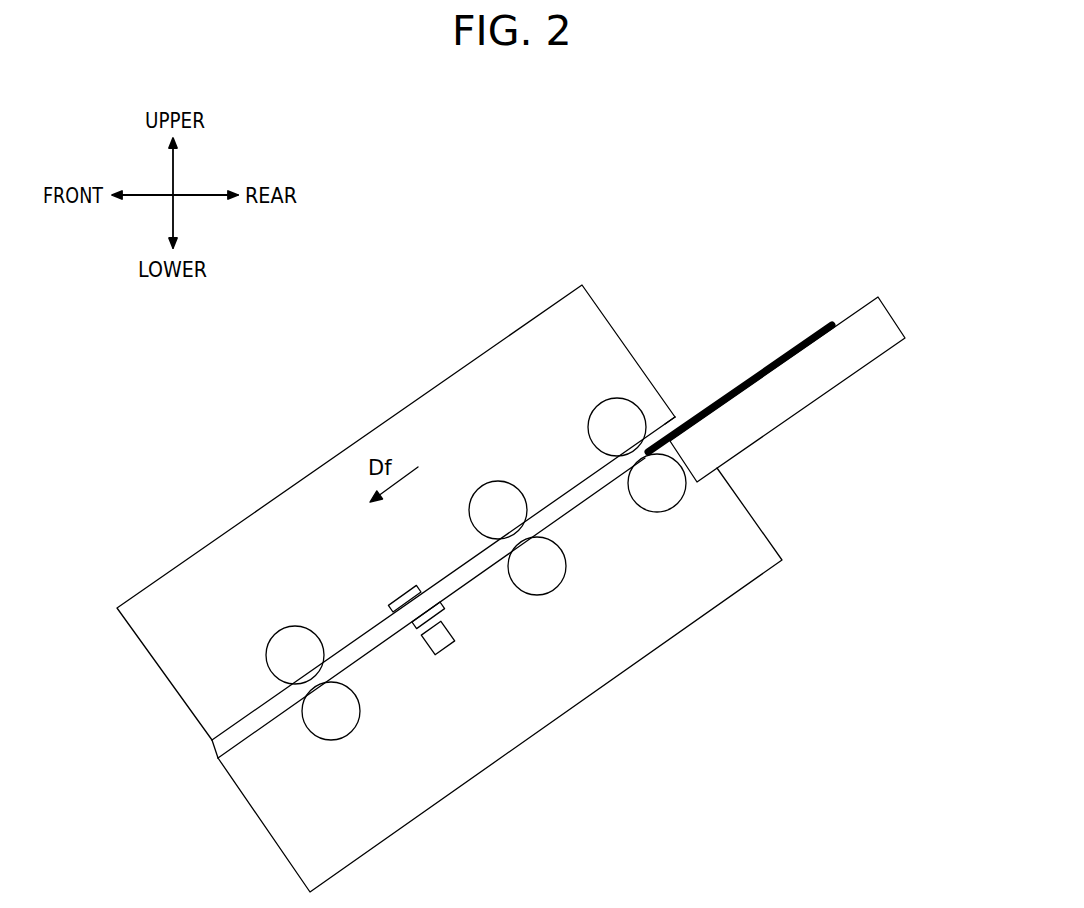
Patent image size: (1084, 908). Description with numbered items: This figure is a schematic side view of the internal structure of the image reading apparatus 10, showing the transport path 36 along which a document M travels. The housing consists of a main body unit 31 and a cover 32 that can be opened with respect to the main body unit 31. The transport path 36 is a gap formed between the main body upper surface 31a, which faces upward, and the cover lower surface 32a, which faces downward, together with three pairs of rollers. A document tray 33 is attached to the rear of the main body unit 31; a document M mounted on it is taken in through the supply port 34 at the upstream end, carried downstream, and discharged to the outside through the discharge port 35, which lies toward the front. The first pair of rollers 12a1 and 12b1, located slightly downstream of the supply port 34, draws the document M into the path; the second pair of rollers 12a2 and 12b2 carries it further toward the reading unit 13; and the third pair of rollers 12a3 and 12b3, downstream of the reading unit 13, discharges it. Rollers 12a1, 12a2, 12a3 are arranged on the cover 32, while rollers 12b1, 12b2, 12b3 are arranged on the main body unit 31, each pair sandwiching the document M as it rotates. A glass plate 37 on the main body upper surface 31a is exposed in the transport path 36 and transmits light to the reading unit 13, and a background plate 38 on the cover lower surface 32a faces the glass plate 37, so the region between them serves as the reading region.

The image reading apparatus 10 is at (128, 547).
The roller 12a1 is at (595, 415).
The roller 12a2 is at (480, 492).
The roller 12a3 is at (297, 626).
The roller 12b1 is at (682, 505).
The roller 12b2 is at (548, 595).
The roller 12b3 is at (327, 743).
The reading unit 13 is at (445, 645).
The main body unit 31 is at (766, 548).
The main body upper surface 31a is at (488, 608).
The cover 32 is at (537, 312).
The cover lower surface 32a is at (443, 524).
The document tray 33 is at (892, 318).
The supply port 34 is at (679, 410).
The discharge port 35 is at (196, 752).
The transport path 36 is at (403, 763).
The glass plate 37 is at (418, 628).
The background plate 38 is at (428, 580).
The document M is at (810, 321).